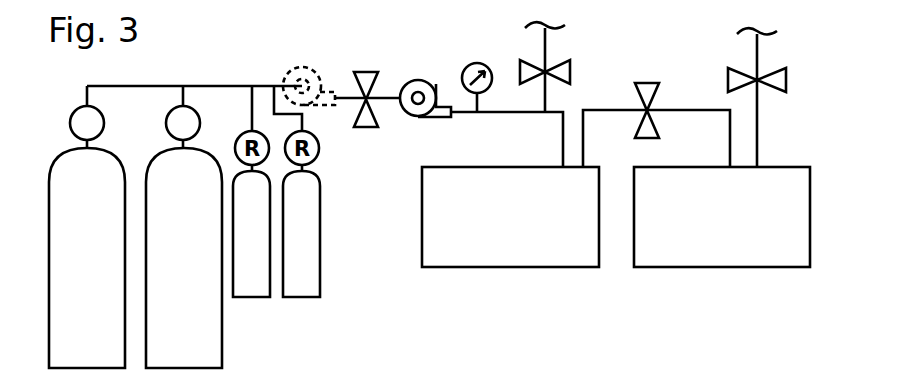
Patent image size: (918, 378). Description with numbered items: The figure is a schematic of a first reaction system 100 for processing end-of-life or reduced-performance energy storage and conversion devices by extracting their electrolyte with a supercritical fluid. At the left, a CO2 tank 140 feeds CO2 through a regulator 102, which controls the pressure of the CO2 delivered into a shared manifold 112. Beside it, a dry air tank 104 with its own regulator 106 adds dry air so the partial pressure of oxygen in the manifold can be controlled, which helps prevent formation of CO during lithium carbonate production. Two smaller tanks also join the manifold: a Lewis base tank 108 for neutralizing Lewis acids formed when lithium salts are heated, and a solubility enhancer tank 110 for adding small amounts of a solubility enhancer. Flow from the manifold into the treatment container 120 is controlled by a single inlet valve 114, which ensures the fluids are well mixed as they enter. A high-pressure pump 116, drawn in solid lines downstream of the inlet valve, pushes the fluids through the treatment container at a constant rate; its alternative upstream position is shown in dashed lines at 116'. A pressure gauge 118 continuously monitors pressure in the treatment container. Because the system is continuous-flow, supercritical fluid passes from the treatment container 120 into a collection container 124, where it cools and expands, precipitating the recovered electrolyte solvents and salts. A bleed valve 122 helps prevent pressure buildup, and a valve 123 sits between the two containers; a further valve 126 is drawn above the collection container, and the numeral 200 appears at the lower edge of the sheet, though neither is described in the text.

The first reaction system 100 is at (804, 39).
The regulator 102 is at (70, 125).
The dry air tank 104 is at (184, 258).
The regulator 106 is at (165, 125).
The Lewis base tank 108 is at (250, 297).
The solubility enhancer tank 110 is at (298, 297).
The manifold 112 is at (130, 86).
The inlet valve 114 is at (367, 72).
The pump 116 is at (425, 79).
The pump (alternative position) 116' is at (309, 64).
The pressure gauge 118 is at (479, 63).
The treatment container 120 is at (543, 267).
The bleed valve 122 is at (575, 70).
The valve 123 is at (647, 83).
The collection container 124 is at (752, 267).
The valve 126 is at (727, 80).
The CO2 tank 140 is at (87, 258).
The system 200 is at (812, 375).